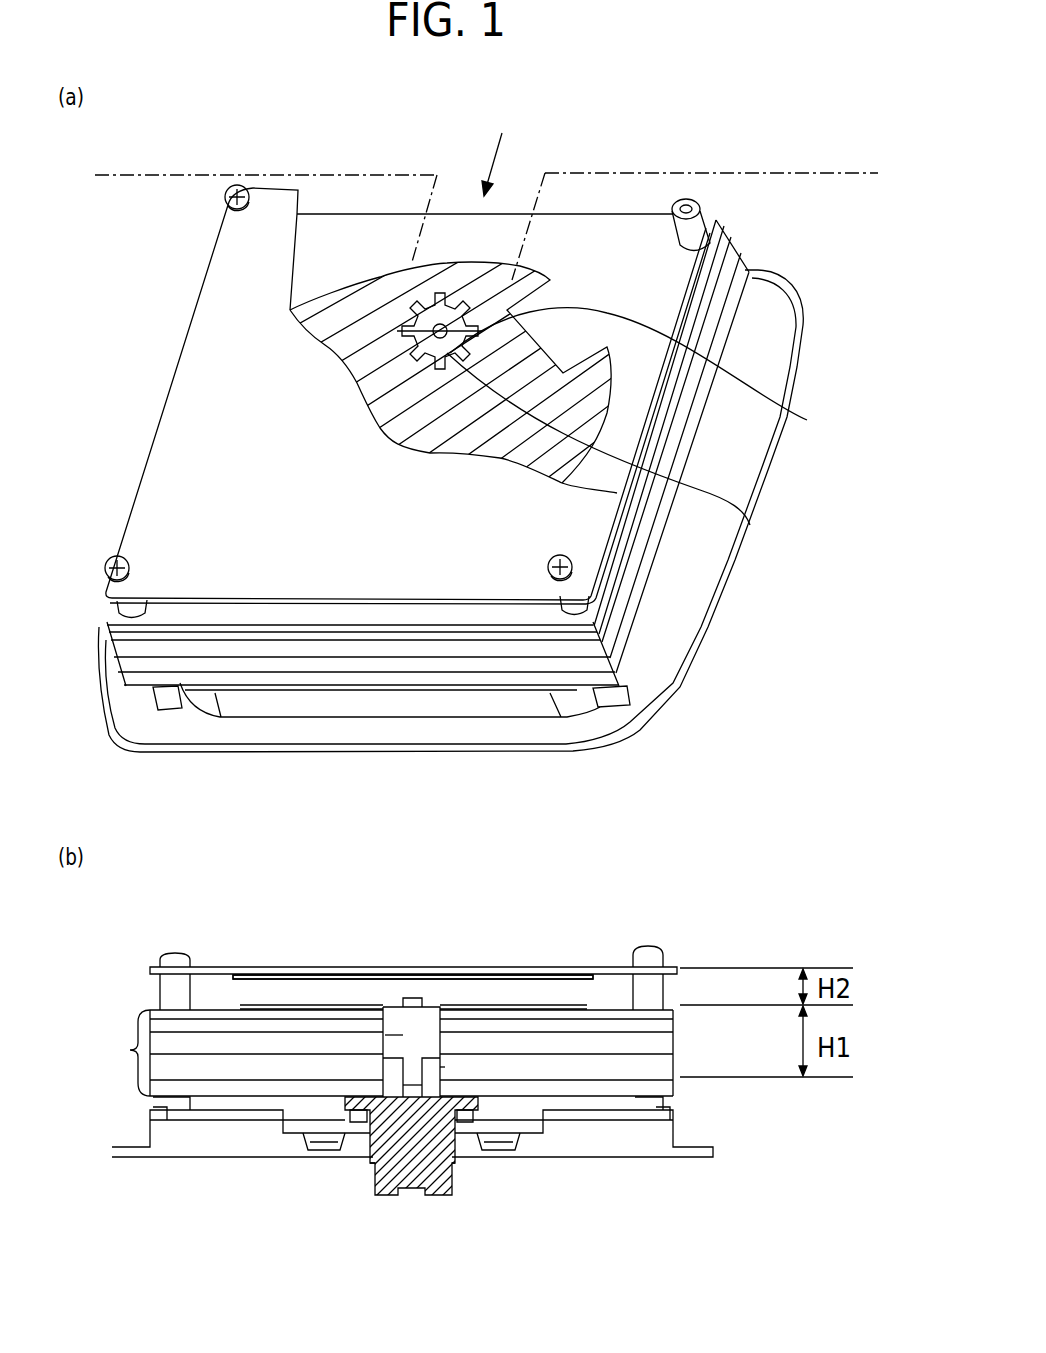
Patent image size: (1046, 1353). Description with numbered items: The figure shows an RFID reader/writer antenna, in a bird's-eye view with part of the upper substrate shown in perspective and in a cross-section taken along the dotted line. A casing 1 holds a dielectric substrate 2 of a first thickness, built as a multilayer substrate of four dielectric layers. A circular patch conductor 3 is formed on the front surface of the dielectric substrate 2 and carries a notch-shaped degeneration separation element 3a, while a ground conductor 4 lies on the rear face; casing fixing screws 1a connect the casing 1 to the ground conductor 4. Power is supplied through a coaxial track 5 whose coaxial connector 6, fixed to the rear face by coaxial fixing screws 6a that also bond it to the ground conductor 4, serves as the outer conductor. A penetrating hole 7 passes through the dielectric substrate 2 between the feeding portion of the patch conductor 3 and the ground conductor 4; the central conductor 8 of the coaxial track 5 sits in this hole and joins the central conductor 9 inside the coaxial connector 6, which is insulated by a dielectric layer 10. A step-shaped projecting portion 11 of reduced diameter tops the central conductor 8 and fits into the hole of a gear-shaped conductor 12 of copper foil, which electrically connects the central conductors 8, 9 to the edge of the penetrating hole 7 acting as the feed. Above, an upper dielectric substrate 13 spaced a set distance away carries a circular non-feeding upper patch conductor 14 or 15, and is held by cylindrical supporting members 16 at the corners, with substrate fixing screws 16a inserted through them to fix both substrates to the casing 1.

The casing 1 is at (637, 717).
The casing fixing screw 1a is at (307, 1150).
The dielectric substrate 2 is at (100, 655).
The patch conductor 3 is at (363, 308).
The degeneration separation element 3a is at (647, 372).
The ground conductor 4 is at (411, 677).
The coaxial track 5 is at (373, 1197).
The coaxial connector 6 is at (455, 1183).
The coaxial fixing screw 6a is at (357, 1123).
The penetrating hole 7 is at (440, 1040).
The central conductor 8 is at (395, 1035).
The central conductor 9 is at (410, 1085).
The dielectric layer 10 is at (395, 1058).
The projecting portion 11 is at (433, 320).
The gear-shaped conductor 12 is at (614, 447).
The upper dielectric substrate 13 is at (200, 398).
The upper patch conductor 14 is at (353, 966).
The upper patch conductor 15 is at (413, 977).
The cylindrical supporting member 16 is at (700, 194).
The substrate fixing screw 16a is at (225, 195).